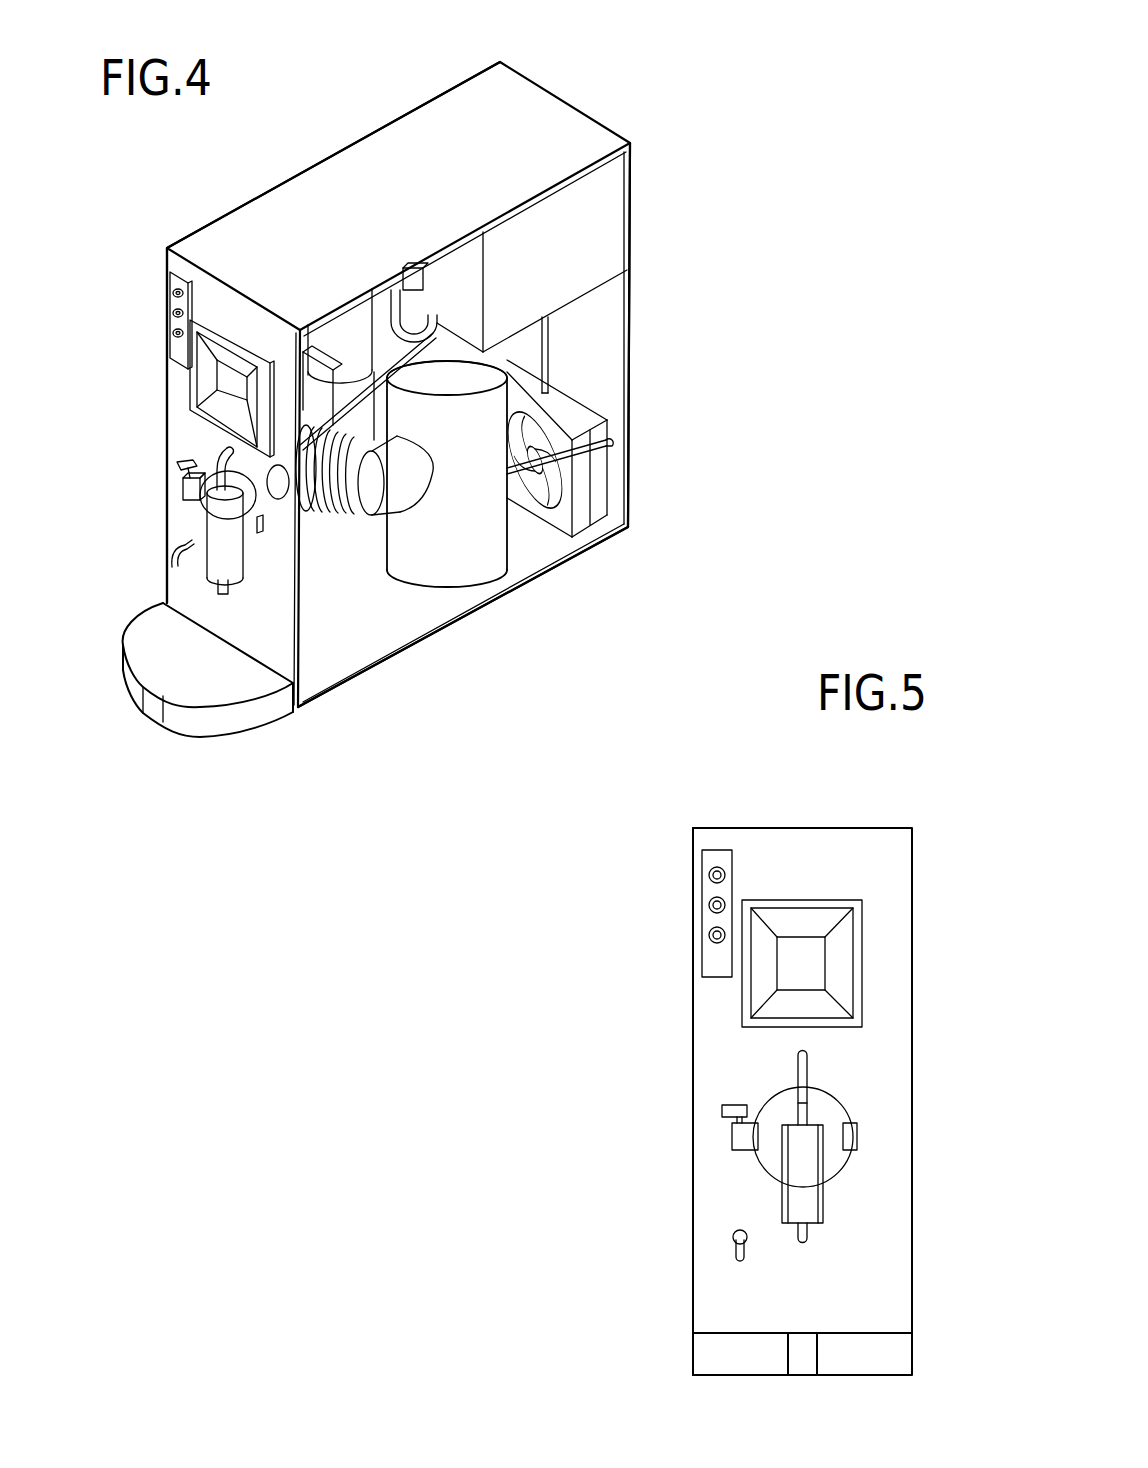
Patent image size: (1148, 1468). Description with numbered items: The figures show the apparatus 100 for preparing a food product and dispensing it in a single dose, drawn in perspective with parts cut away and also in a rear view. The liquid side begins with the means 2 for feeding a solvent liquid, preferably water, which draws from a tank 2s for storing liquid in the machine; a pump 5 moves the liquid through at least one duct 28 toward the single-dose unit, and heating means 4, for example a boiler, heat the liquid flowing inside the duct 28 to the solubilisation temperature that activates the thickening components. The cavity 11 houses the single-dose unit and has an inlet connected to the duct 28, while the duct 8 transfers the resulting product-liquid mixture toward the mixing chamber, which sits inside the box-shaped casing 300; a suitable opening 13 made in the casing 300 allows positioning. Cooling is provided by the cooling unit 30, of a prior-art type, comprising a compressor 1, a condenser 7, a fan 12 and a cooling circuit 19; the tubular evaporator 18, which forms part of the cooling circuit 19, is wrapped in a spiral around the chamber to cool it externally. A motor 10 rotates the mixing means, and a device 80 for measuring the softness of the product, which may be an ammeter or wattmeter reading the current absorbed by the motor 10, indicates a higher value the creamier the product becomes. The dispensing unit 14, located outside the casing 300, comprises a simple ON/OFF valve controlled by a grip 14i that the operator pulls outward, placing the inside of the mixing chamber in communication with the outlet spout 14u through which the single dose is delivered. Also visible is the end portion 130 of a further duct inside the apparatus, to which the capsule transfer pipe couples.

In FIG. 4, the apparatus 100 is at (666, 145).
In FIG. 5, the apparatus 100 is at (624, 1065).
In FIG. 4, the means for feeding a solvent liquid 2 is at (604, 189).
In FIG. 4, the tank 2s is at (543, 222).
In FIG. 4, the box-shaped casing 300 is at (612, 535).
In FIG. 5, the box-shaped casing 300 is at (797, 827).
In FIG. 4, the cooling unit 30 is at (591, 565).
In FIG. 4, the compressor 1 is at (437, 542).
In FIG. 4, the motor 10 is at (455, 478).
In FIG. 4, the heating means 4 is at (333, 336).
In FIG. 4, the pump 5 is at (415, 283).
In FIG. 4, the duct 28 is at (440, 302).
In FIG. 4, the evaporator 18 is at (400, 516).
In FIG. 4, the device for measuring the softness of the product 80 is at (318, 525).
In FIG. 4, the condenser 7 is at (600, 480).
In FIG. 4, the fan 12 is at (540, 438).
In FIG. 4, the cooling circuit 19 is at (558, 331).
In FIG. 4, the opening 13 is at (167, 323).
In FIG. 5, the opening 13 is at (796, 962).
In FIG. 4, the cavity 11 is at (228, 378).
In FIG. 5, the cavity 11 is at (811, 957).
In FIG. 4, the duct for transferring the product-liquid mixture 8 is at (226, 447).
In FIG. 5, the duct for transferring the product-liquid mixture 8 is at (807, 1063).
In FIG. 4, the dispensing unit 14 is at (195, 527).
In FIG. 5, the dispensing unit 14 is at (771, 1200).
In FIG. 4, the grip 14i is at (184, 478).
In FIG. 5, the grip 14i is at (722, 1110).
In FIG. 4, the outlet spout 14u is at (227, 595).
In FIG. 5, the outlet spout 14u is at (808, 1238).
In FIG. 4, the end portion 130 is at (172, 566).
In FIG. 5, the end portion 130 is at (732, 1248).